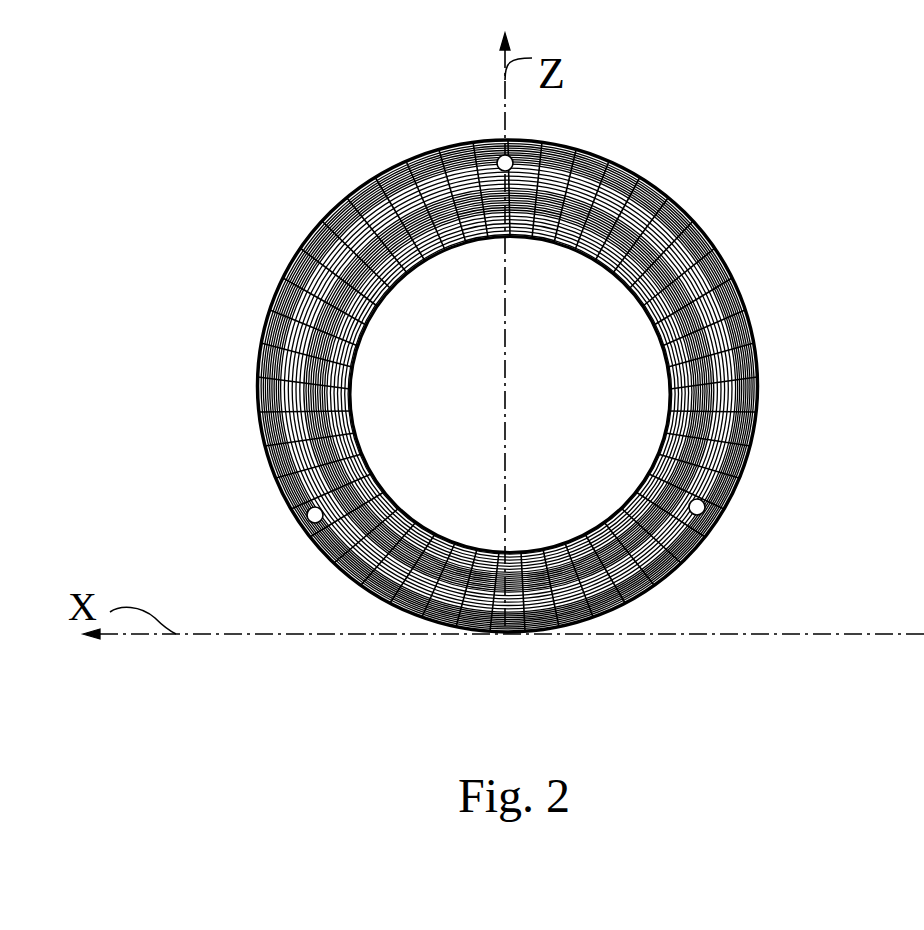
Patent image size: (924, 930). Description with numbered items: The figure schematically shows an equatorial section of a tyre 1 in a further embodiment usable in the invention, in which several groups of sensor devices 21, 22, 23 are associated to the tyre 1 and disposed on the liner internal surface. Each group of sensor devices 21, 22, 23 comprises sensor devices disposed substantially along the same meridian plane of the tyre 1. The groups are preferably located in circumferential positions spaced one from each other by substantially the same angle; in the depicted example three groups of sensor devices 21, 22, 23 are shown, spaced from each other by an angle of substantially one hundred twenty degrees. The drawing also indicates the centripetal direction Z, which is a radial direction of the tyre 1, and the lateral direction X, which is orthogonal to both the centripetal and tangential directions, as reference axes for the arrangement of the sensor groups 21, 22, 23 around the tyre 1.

The tyre 1 is at (273, 276).
The group of sensor devices 21 is at (400, 165).
The group of sensor devices 22 is at (309, 521).
The group of sensor devices 23 is at (705, 507).